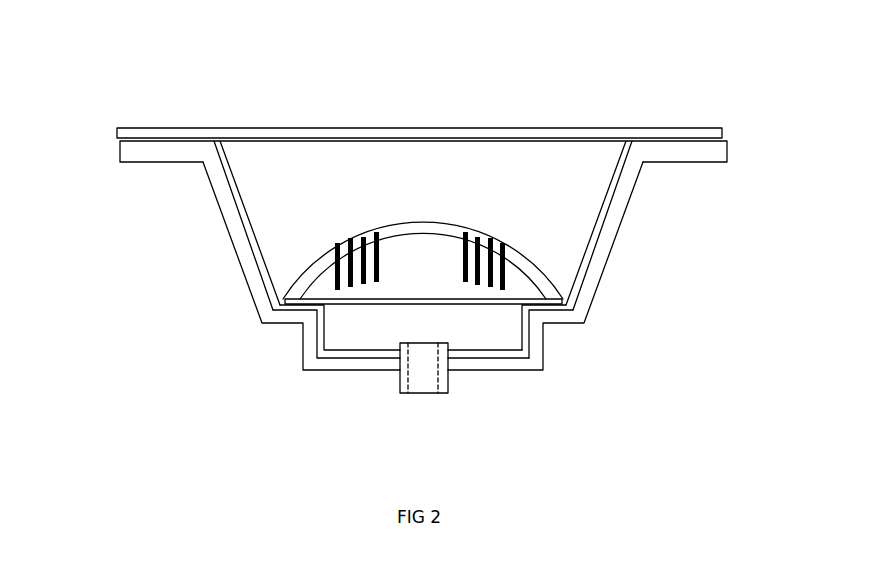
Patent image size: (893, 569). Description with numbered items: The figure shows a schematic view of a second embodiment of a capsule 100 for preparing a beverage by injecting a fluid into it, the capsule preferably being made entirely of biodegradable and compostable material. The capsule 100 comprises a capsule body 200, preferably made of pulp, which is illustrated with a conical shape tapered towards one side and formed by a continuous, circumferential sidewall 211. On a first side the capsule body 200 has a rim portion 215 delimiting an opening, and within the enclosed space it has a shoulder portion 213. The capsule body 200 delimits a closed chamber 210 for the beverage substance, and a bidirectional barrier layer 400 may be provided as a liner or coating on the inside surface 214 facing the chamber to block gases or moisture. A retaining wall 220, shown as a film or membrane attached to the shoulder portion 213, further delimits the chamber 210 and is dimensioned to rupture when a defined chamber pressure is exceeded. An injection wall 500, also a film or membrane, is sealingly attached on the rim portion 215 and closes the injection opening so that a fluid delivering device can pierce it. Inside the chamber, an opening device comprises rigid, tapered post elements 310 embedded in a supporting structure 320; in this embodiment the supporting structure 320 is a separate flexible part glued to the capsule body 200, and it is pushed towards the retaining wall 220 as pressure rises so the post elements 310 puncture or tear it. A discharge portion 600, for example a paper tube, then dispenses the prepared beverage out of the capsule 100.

The capsule 100 is at (153, 59).
The capsule body 200 is at (437, 270).
The closed chamber 210 is at (271, 170).
The sidewall 211 is at (243, 238).
The shoulder portion 213 is at (562, 324).
The inside surface 214 is at (259, 241).
The rim portion 215 is at (727, 158).
The retaining wall 220 is at (412, 302).
The post elements 310 is at (375, 231).
The supporting structure 320 is at (417, 232).
The barrier layer 400 is at (611, 200).
The injection wall 500 is at (425, 133).
The discharge portion 600 is at (415, 387).